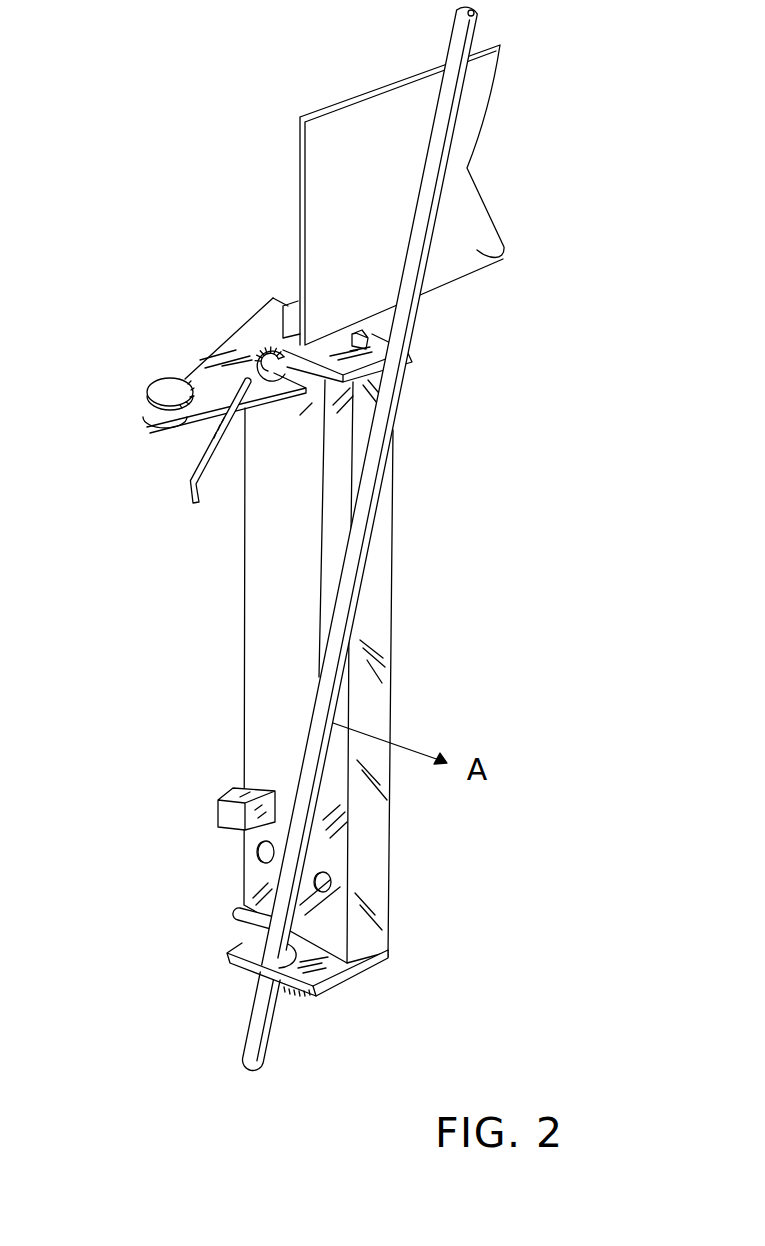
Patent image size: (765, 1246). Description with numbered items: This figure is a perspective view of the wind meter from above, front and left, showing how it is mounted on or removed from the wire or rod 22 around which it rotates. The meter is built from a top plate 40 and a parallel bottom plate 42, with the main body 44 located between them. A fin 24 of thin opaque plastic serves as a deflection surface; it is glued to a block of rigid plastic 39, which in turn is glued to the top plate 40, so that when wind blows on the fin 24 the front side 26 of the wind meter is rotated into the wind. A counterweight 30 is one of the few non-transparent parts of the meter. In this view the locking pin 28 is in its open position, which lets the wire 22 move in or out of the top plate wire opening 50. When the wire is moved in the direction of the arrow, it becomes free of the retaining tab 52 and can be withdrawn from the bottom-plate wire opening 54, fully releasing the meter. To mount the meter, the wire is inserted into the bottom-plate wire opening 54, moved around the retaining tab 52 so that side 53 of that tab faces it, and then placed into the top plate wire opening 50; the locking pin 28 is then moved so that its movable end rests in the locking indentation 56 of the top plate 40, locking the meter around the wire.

The wire or rod 22 is at (450, 34).
The fin 24 is at (505, 255).
The front side 26 is at (287, 585).
The locking pin 28 is at (185, 485).
The counterweight 30 is at (150, 393).
The block of rigid plastic 39 is at (290, 305).
The top plate 40 is at (183, 363).
The bottom plate 42 is at (358, 976).
The main body 44 is at (410, 667).
The top plate wire opening 50 is at (267, 363).
The retaining tab 52 is at (218, 803).
The side of retaining tab 53 is at (253, 842).
The bottom-plate wire opening 54 is at (251, 934).
The locking indentation 56 is at (366, 333).